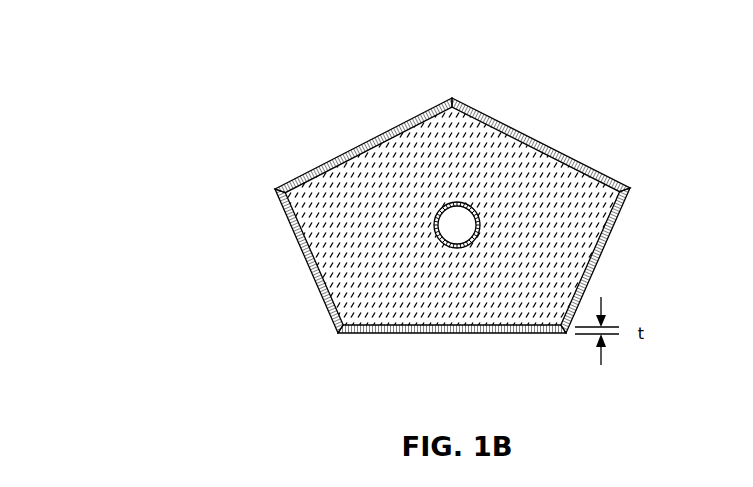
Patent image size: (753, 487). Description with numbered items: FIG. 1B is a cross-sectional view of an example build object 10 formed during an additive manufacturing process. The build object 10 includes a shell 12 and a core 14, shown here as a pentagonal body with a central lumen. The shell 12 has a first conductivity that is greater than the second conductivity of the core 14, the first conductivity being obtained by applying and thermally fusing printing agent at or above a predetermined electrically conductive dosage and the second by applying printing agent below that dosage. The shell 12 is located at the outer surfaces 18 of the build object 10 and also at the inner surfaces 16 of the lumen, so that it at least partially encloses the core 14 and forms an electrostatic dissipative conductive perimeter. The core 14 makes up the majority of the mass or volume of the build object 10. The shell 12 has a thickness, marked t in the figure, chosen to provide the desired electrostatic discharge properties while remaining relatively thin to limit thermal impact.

The build object 10 is at (111, 62).
The shell 12 is at (303, 250).
The core 14 is at (519, 173).
The inner surfaces 16 is at (458, 213).
The outer surfaces 18 is at (610, 243).